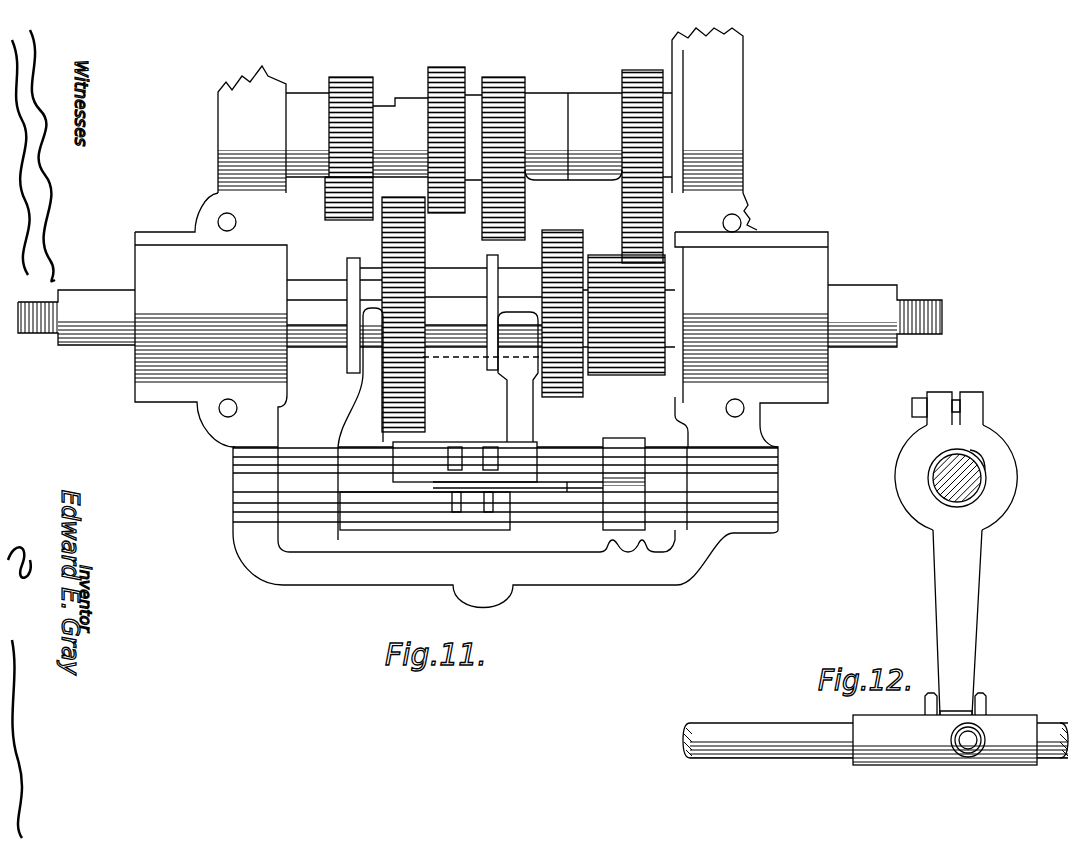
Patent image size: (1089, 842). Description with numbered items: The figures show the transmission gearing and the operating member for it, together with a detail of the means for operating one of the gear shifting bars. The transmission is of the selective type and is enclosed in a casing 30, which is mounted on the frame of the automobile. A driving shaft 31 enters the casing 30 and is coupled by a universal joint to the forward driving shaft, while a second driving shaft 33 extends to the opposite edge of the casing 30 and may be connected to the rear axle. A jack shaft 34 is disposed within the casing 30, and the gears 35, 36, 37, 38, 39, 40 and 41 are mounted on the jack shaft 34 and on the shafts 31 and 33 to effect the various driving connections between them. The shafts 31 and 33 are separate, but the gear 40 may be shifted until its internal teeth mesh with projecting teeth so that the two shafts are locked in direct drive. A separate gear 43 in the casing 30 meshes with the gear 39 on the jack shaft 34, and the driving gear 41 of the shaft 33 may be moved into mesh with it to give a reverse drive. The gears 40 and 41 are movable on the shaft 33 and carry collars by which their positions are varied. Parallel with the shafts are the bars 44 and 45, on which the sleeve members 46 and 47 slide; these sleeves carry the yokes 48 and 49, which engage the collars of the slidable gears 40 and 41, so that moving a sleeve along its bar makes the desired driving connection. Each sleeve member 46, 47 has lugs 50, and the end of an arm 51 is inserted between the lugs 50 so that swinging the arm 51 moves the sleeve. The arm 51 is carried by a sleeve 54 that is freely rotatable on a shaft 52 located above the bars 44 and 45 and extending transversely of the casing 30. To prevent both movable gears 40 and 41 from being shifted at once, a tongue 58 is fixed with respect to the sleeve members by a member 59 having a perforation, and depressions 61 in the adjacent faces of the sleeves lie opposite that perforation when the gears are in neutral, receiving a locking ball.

In FIG. 11, the transmission casing 30 is at (266, 90).
In FIG. 11, the driving shaft 31 is at (852, 300).
In FIG. 11, the driving shaft 33 is at (112, 332).
In FIG. 11, the jack shaft 34 is at (384, 118).
In FIG. 11, the gear 35 is at (657, 372).
In FIG. 11, the gear 36 is at (648, 240).
In FIG. 11, the gear 37 is at (505, 95).
In FIG. 11, the gear 38 is at (450, 90).
In FIG. 11, the gear 39 is at (349, 95).
In FIG. 11, the gear 40 is at (438, 445).
In FIG. 11, the driving gear 41 is at (407, 300).
In FIG. 11, the separate gear 43 is at (356, 208).
In FIG. 11, the bar 44 is at (298, 458).
In FIG. 12, the bar 44 is at (770, 734).
In FIG. 11, the bar 45 is at (328, 520).
In FIG. 12, the sleeve member 46 is at (891, 750).
In FIG. 11, the sleeve member 47 is at (404, 506).
In FIG. 11, the yoke 48 is at (515, 386).
In FIG. 11, the yoke 49 is at (370, 392).
In FIG. 11, the lug 50 is at (445, 448).
In FIG. 12, the lug 50 is at (928, 694).
In FIG. 12, the arm 51 is at (964, 612).
In FIG. 12, the shaft 52 is at (945, 495).
In FIG. 12, the sleeve 54 is at (970, 460).
In FIG. 11, the tongue 58 is at (568, 486).
In FIG. 11, the member 59 is at (630, 468).
In FIG. 12, the depression 61 is at (966, 746).